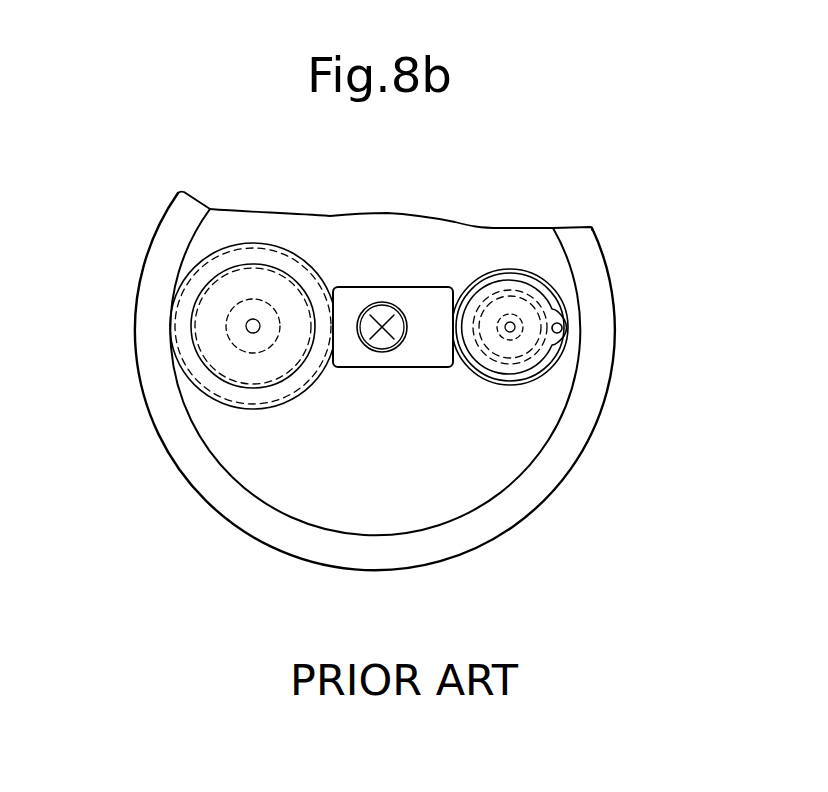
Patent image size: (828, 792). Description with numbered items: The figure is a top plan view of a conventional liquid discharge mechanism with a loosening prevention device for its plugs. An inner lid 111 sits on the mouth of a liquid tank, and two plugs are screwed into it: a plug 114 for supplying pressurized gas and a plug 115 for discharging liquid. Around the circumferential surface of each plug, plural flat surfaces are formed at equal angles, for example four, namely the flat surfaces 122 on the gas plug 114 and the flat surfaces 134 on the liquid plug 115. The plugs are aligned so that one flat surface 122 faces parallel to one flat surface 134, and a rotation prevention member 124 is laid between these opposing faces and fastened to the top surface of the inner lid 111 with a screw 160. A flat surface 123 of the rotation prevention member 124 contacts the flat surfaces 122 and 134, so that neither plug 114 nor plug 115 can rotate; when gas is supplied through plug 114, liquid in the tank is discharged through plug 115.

The inner lid 111 is at (178, 218).
The plug for discharging liquid 115 is at (203, 275).
The flat surface 134 is at (338, 290).
The rotation prevention member 124 is at (402, 295).
The flat surface 123 is at (455, 302).
The flat surface 122 is at (510, 273).
The screw 160 is at (383, 347).
The plug for supplying pressurized gas 114 is at (558, 365).